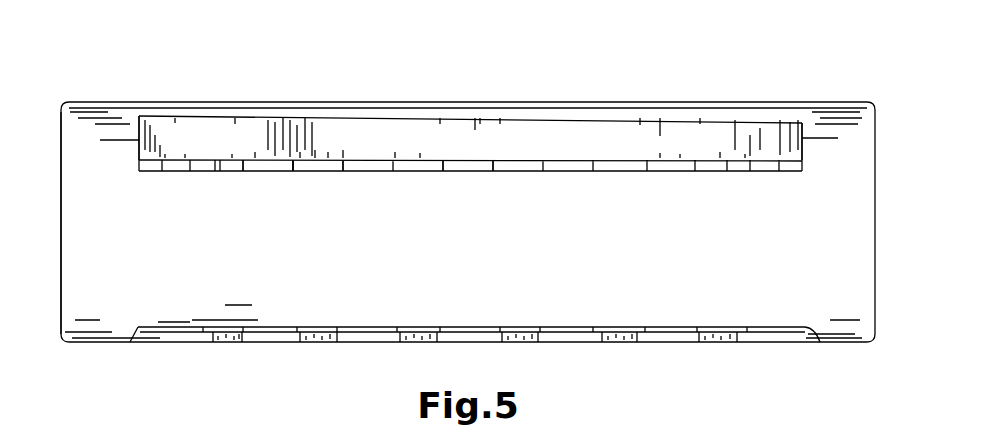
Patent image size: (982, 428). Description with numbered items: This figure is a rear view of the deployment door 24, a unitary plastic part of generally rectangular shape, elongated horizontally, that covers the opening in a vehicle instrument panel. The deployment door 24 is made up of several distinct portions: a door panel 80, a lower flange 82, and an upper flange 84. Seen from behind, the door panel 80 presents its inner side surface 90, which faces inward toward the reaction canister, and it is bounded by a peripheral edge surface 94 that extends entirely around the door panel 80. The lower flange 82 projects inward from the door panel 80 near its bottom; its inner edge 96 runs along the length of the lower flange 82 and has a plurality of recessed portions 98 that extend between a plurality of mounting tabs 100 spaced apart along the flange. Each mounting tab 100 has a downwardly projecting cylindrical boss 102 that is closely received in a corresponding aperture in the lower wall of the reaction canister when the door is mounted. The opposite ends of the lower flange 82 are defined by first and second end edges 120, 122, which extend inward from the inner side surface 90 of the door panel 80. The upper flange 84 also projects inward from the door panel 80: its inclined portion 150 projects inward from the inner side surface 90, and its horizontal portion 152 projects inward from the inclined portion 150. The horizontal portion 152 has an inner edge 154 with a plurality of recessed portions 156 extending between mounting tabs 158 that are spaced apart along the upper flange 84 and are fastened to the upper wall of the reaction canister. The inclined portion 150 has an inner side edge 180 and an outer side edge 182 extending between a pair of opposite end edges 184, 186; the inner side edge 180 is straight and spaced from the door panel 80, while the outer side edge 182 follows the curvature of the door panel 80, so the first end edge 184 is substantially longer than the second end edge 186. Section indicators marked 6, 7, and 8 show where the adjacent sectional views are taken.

The deployment door 24 is at (177, 54).
The door panel 80 is at (392, 92).
The lower flange 82 is at (644, 316).
The upper flange 84 is at (565, 184).
The inner side surface 90 is at (530, 117).
The peripheral edge surface 94 is at (60, 199).
The inner edge 96 is at (210, 341).
The recessed portions 98 is at (347, 330).
The mounting tabs 100 is at (335, 326).
The cylindrical boss 102 is at (415, 341).
The first end edge 120 is at (145, 340).
The second end edge 122 is at (805, 332).
The inclined portion 150 is at (208, 128).
The horizontal portion 152 is at (210, 160).
The inner edge 154 is at (220, 172).
The recessed portions 156 is at (245, 172).
The mounting tabs 158 is at (330, 173).
The inner side edge 180 is at (467, 163).
The outer side edge 182 is at (482, 122).
The first end edge 184 is at (138, 140).
The second end edge 186 is at (802, 147).
The section line 6 is at (43, 287).
The section line 7 is at (43, 53).
The section line 8 is at (762, 98).